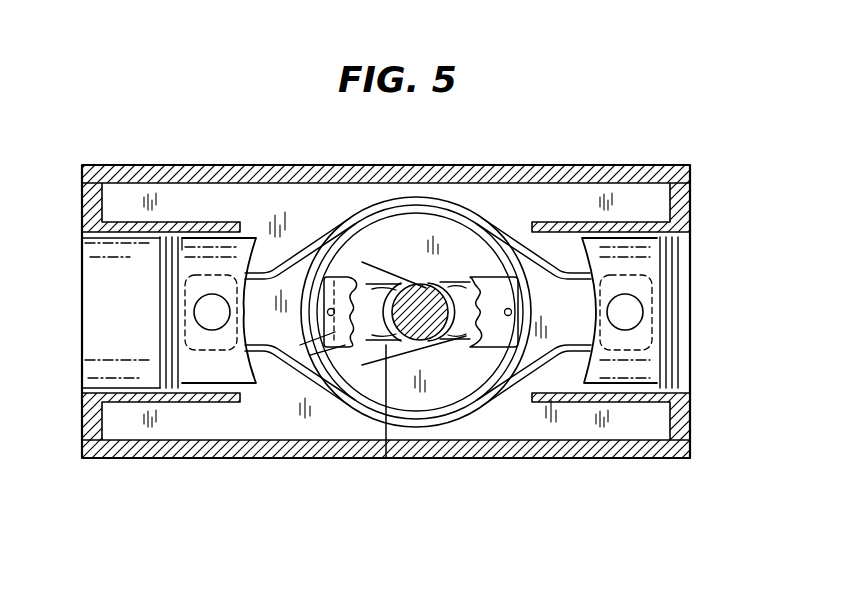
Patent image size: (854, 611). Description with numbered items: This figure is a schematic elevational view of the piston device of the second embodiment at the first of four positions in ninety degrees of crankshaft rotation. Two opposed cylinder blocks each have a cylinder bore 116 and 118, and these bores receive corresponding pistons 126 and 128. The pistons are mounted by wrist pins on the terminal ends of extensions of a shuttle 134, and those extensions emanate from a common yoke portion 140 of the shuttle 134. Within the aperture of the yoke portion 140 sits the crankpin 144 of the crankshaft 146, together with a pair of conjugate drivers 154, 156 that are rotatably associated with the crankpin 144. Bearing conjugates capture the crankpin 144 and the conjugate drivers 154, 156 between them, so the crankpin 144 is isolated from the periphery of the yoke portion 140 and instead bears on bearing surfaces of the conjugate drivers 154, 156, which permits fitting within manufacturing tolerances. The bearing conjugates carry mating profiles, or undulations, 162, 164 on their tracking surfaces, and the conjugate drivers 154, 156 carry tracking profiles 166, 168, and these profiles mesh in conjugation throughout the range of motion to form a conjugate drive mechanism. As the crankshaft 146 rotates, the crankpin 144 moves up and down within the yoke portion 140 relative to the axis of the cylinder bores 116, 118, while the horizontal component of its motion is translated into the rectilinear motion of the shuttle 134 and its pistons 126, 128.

The cylinder bore 116 is at (685, 260).
The cylinder bore 118 is at (112, 290).
The piston 126 is at (627, 250).
The piston 128 is at (214, 252).
The shuttle 134 is at (330, 238).
The yoke portion 140 is at (447, 243).
The crankpin 144 is at (448, 262).
The crankshaft 146 is at (421, 286).
The conjugate driver 154 is at (467, 336).
The conjugate driver 156 is at (380, 288).
The mating profile 162 is at (482, 304).
The mating profile 164 is at (300, 345).
The tracking profile 166 is at (470, 278).
The tracking profile 168 is at (310, 355).